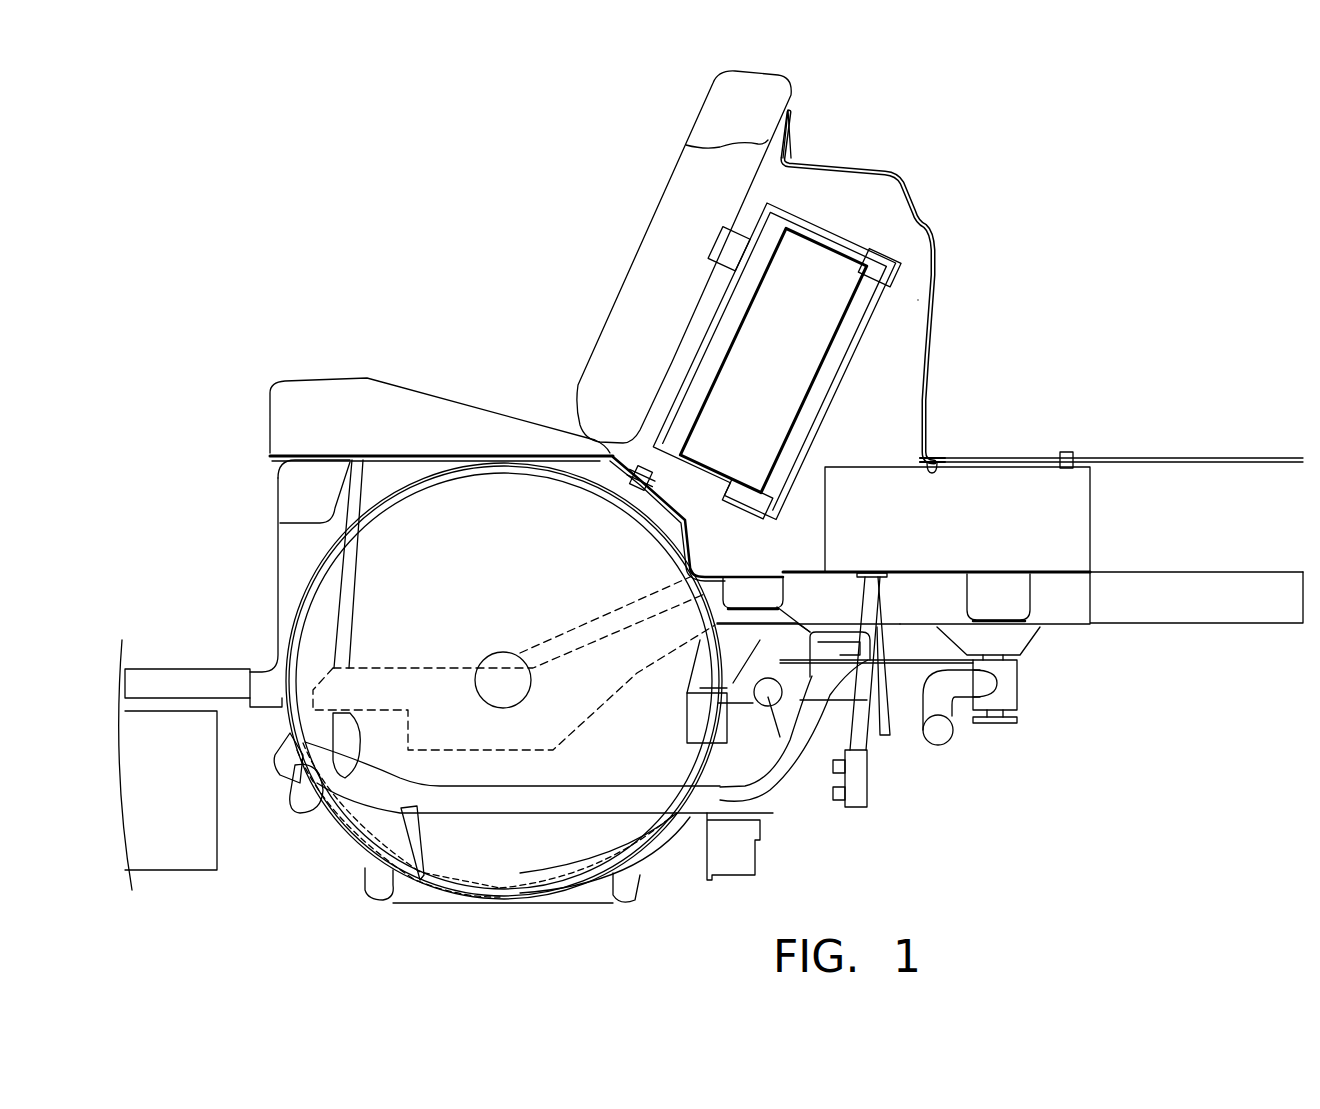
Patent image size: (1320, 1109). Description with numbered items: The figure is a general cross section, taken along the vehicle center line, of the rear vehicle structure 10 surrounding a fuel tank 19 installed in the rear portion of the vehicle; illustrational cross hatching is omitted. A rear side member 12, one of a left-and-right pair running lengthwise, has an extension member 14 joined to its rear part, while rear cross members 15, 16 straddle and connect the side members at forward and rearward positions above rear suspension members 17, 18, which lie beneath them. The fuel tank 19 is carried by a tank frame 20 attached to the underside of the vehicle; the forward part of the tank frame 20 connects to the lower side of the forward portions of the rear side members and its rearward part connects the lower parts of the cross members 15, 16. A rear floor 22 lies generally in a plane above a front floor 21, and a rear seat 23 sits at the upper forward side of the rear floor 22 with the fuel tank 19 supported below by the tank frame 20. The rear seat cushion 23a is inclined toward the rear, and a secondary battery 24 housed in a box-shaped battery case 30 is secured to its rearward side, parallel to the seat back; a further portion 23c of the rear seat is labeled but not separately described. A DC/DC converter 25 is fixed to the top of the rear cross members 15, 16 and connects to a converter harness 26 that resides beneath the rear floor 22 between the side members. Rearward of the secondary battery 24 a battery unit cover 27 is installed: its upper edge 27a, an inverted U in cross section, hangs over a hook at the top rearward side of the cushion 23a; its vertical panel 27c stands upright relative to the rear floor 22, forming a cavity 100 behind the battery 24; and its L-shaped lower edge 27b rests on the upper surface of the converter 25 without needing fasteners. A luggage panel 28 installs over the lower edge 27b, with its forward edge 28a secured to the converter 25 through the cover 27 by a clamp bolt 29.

The rear vehicle structure 10 is at (982, 820).
The rear side member 12 is at (1080, 618).
The extension member 14 is at (1223, 624).
The rear cross member 15 is at (753, 583).
The rear cross member 16 is at (1013, 603).
The rear suspension member 17 is at (780, 790).
The rear suspension member 18 is at (950, 733).
The fuel tank 19 is at (383, 568).
The tank frame 20 is at (730, 803).
The front floor 21 is at (182, 660).
The rear floor 22 is at (1138, 570).
The rear seat 23 is at (515, 257).
The rear seat cushion 23a is at (662, 185).
The seat back upper portion 23c is at (688, 144).
The secondary battery 24 is at (817, 257).
The DC/DC converter 25 is at (1018, 480).
The DC/DC converter harness 26 is at (857, 740).
The battery unit cover 27 is at (897, 284).
The upper edge of battery unit cover 27a is at (797, 117).
The lower edge of battery unit cover 27b is at (920, 465).
The vertical panel of battery unit cover 27c is at (930, 346).
The luggage panel 28 is at (1111, 423).
The forward edge of luggage panel 28a is at (933, 462).
The clamp bolt 29 is at (1068, 452).
The battery case 30 is at (817, 210).
The space or cavity 100 is at (900, 388).